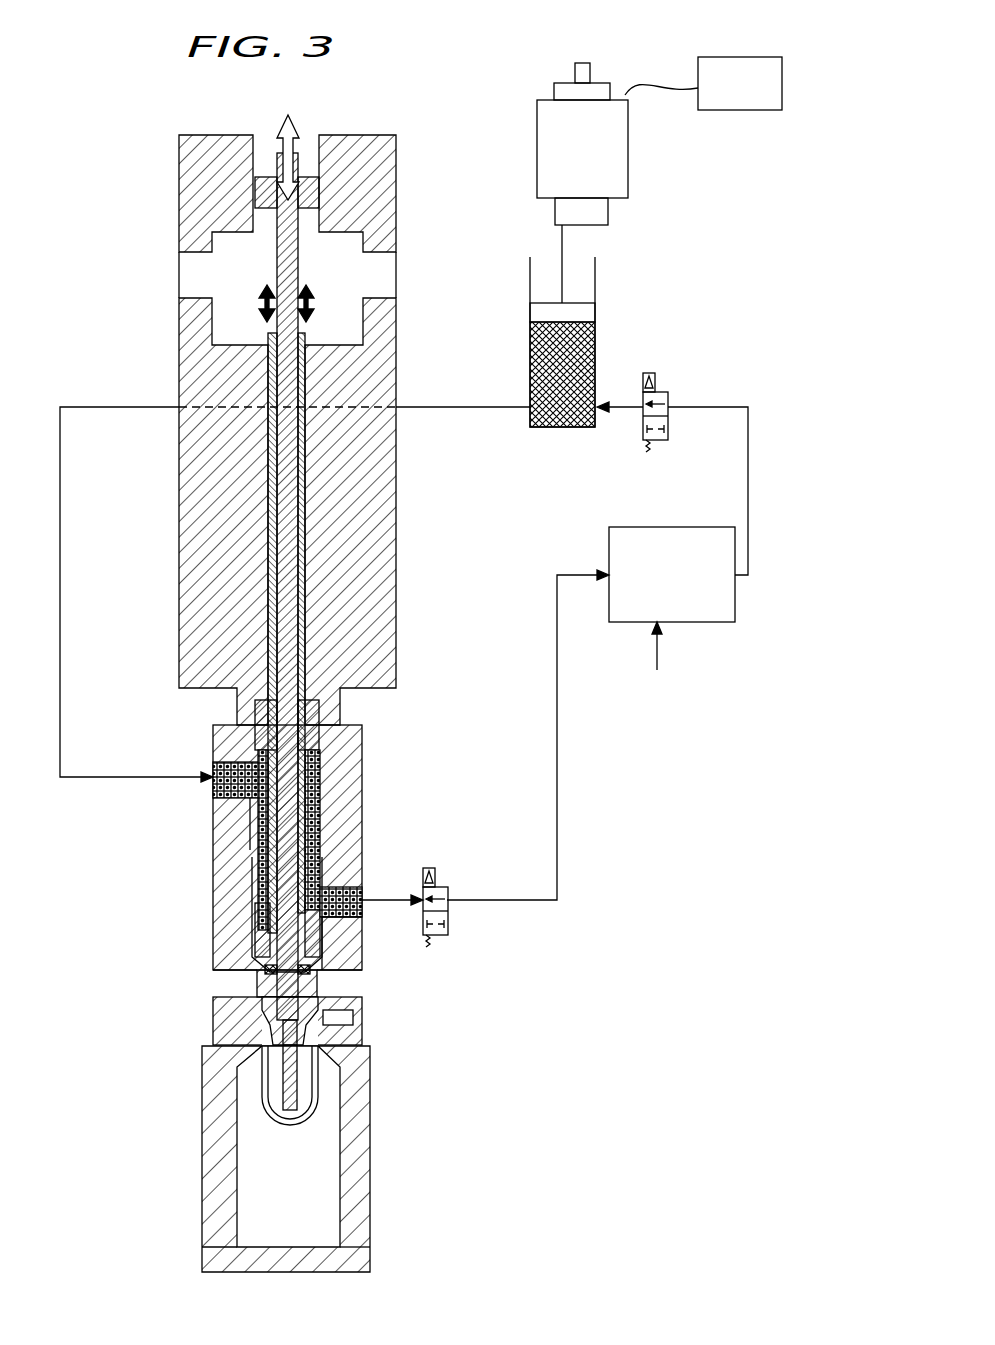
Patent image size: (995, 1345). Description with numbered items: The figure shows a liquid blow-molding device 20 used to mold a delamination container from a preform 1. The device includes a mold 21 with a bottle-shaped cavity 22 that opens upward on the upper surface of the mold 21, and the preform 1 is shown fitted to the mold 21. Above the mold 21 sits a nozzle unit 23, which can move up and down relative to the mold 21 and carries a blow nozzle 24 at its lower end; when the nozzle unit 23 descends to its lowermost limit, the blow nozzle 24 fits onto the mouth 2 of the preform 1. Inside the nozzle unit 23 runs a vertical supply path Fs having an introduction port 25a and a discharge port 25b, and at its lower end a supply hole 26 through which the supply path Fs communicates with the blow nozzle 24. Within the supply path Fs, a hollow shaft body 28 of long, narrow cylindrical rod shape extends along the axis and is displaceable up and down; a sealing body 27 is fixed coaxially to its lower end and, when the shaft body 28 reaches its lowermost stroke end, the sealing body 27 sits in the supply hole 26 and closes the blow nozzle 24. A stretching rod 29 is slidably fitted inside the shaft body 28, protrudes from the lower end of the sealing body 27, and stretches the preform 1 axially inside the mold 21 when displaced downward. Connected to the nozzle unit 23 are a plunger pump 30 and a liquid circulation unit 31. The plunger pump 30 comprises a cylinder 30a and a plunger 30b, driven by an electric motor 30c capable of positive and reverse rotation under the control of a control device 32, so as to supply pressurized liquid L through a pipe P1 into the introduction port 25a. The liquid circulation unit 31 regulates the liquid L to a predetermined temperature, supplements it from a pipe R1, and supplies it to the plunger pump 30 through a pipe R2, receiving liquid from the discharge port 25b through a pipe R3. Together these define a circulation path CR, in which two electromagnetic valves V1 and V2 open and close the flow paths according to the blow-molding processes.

The preform 1 is at (325, 1097).
The mouth 2 is at (330, 1037).
The liquid blow-molding device 20 is at (384, 101).
The mold 21 is at (353, 1213).
The cavity 22 is at (345, 1200).
The nozzle unit 23 is at (154, 288).
The blow nozzle 24 is at (345, 1010).
The introduction port 25a is at (222, 782).
The discharge port 25b is at (357, 893).
The supply hole 26 is at (330, 938).
The sealing body 27 is at (268, 925).
The shaft body 28 is at (268, 588).
The stretching rod 29 is at (290, 632).
The plunger pump 30 is at (612, 270).
The cylinder 30a is at (596, 290).
The plunger 30b is at (585, 315).
The electric motor 30c is at (617, 147).
The liquid circulation unit 31 is at (695, 628).
The control device 32 is at (782, 88).
The liquid L is at (533, 350).
The supply path Fs is at (314, 838).
The electromagnetic valve V1 is at (668, 430).
The electromagnetic valve V2 is at (435, 940).
The pipe P1 is at (490, 410).
The pipe R1 is at (657, 666).
The pipe R2 is at (748, 493).
The pipe R3 is at (557, 808).
The circulation path CR is at (574, 879).